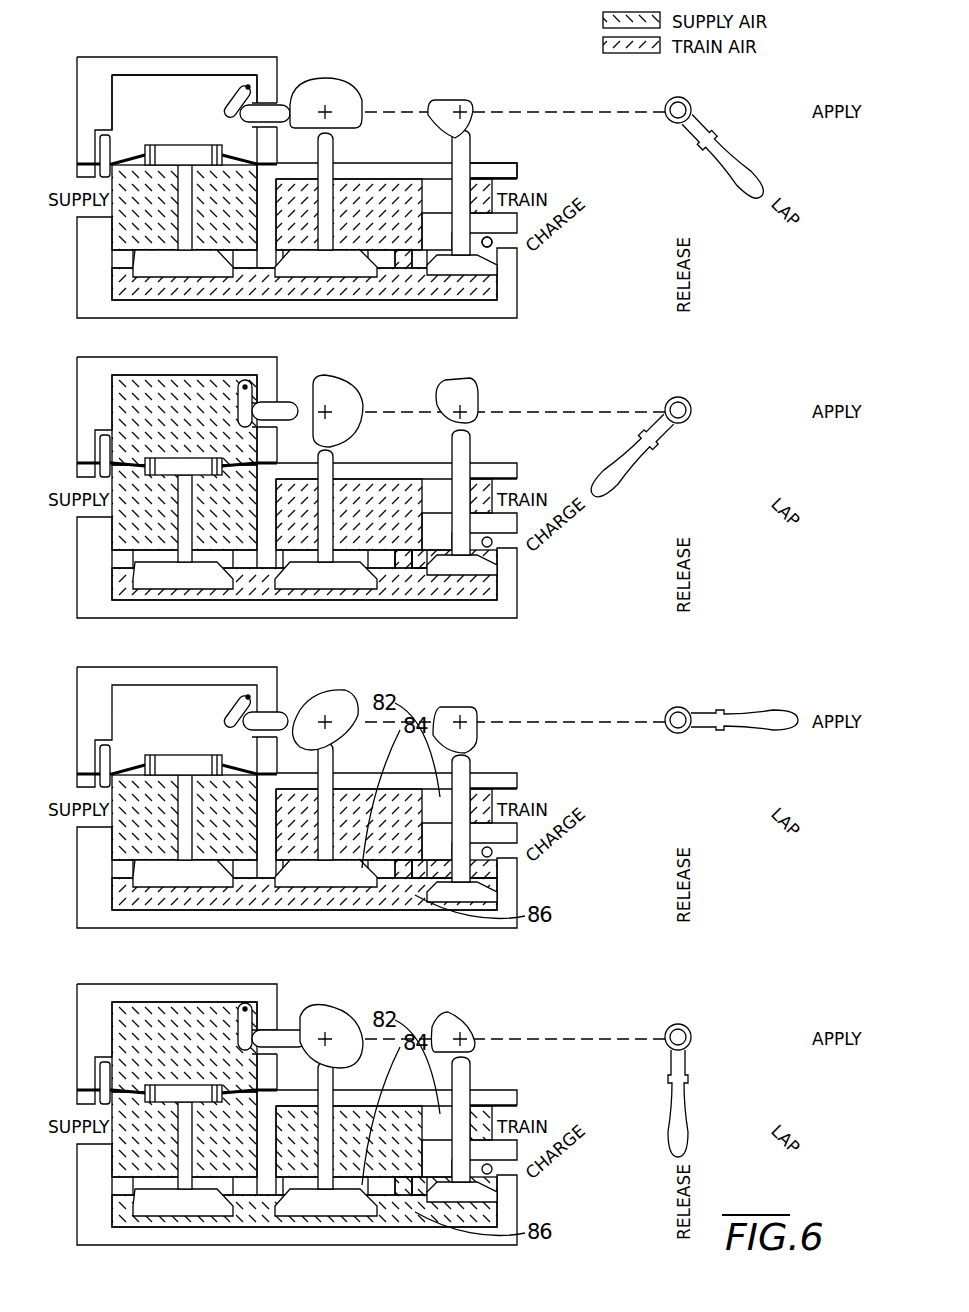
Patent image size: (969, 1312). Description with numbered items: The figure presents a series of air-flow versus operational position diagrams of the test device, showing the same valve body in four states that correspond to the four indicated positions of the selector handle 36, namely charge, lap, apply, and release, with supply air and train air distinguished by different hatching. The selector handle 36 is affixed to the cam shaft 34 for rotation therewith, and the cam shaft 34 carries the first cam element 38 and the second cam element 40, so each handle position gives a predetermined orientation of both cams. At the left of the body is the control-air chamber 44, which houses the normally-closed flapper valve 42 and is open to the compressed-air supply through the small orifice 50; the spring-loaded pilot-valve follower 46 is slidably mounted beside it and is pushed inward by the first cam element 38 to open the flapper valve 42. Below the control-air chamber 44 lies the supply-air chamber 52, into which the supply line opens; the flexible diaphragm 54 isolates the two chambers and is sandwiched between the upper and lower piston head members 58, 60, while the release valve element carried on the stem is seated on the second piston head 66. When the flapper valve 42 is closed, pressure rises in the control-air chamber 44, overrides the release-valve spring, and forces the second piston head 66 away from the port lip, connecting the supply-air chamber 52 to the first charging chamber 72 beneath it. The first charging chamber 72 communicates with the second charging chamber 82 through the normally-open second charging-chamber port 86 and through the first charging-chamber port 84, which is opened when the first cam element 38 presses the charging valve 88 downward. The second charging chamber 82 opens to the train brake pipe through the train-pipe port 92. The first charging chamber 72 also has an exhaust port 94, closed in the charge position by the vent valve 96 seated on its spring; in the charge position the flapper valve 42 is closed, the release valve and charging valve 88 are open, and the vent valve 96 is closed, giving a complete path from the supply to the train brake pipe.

The cam shaft 34 is at (555, 110).
The selector handle 36 is at (735, 165).
The first cam element 38 is at (328, 88).
The second cam element 40 is at (445, 102).
The flapper valve 42 is at (231, 78).
The control-air chamber 44 is at (143, 87).
The pilot-valve follower 46 is at (282, 108).
The orifice 50 is at (103, 130).
The supply-air chamber 52 is at (118, 228).
The diaphragm 54 is at (135, 150).
The upper piston head member 58 is at (183, 146).
The lower piston head member 60 is at (196, 160).
The second piston head 66 is at (143, 258).
The first charging chamber 72 is at (127, 290).
The second charging chamber 82 is at (400, 195).
The first charging-chamber port 84 is at (395, 486).
The second charging-chamber port 86 is at (482, 583).
The charging valve 88 is at (325, 160).
The train-pipe port 92 is at (487, 183).
The exhaust port 94 is at (490, 245).
The vent valve 96 is at (465, 150).